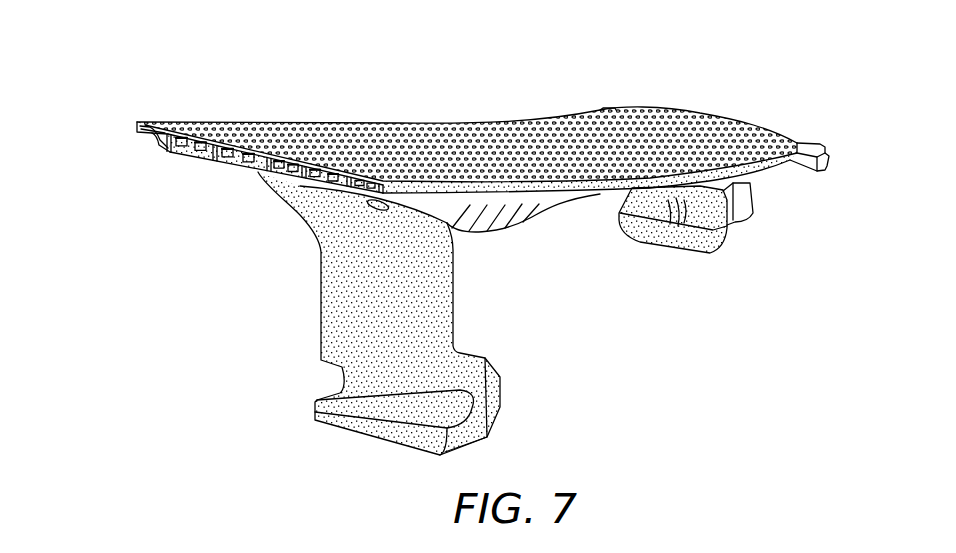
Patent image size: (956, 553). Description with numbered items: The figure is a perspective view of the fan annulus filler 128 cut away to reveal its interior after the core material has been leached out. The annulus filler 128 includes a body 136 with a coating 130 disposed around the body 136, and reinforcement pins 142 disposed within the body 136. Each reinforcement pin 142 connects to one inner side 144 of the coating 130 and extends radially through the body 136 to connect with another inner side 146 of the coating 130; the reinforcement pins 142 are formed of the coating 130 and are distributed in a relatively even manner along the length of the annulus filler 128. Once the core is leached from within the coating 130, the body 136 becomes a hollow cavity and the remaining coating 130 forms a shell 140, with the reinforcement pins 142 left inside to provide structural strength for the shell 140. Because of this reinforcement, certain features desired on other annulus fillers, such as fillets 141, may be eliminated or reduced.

The annulus filler 128 is at (767, 103).
The coating 130 is at (654, 116).
The shell 140 is at (540, 109).
The fillets 141 is at (530, 228).
The reinforcement pins 142 is at (263, 163).
The inner side 144 is at (136, 128).
The body 136 is at (172, 145).
The inner side 146 is at (191, 148).